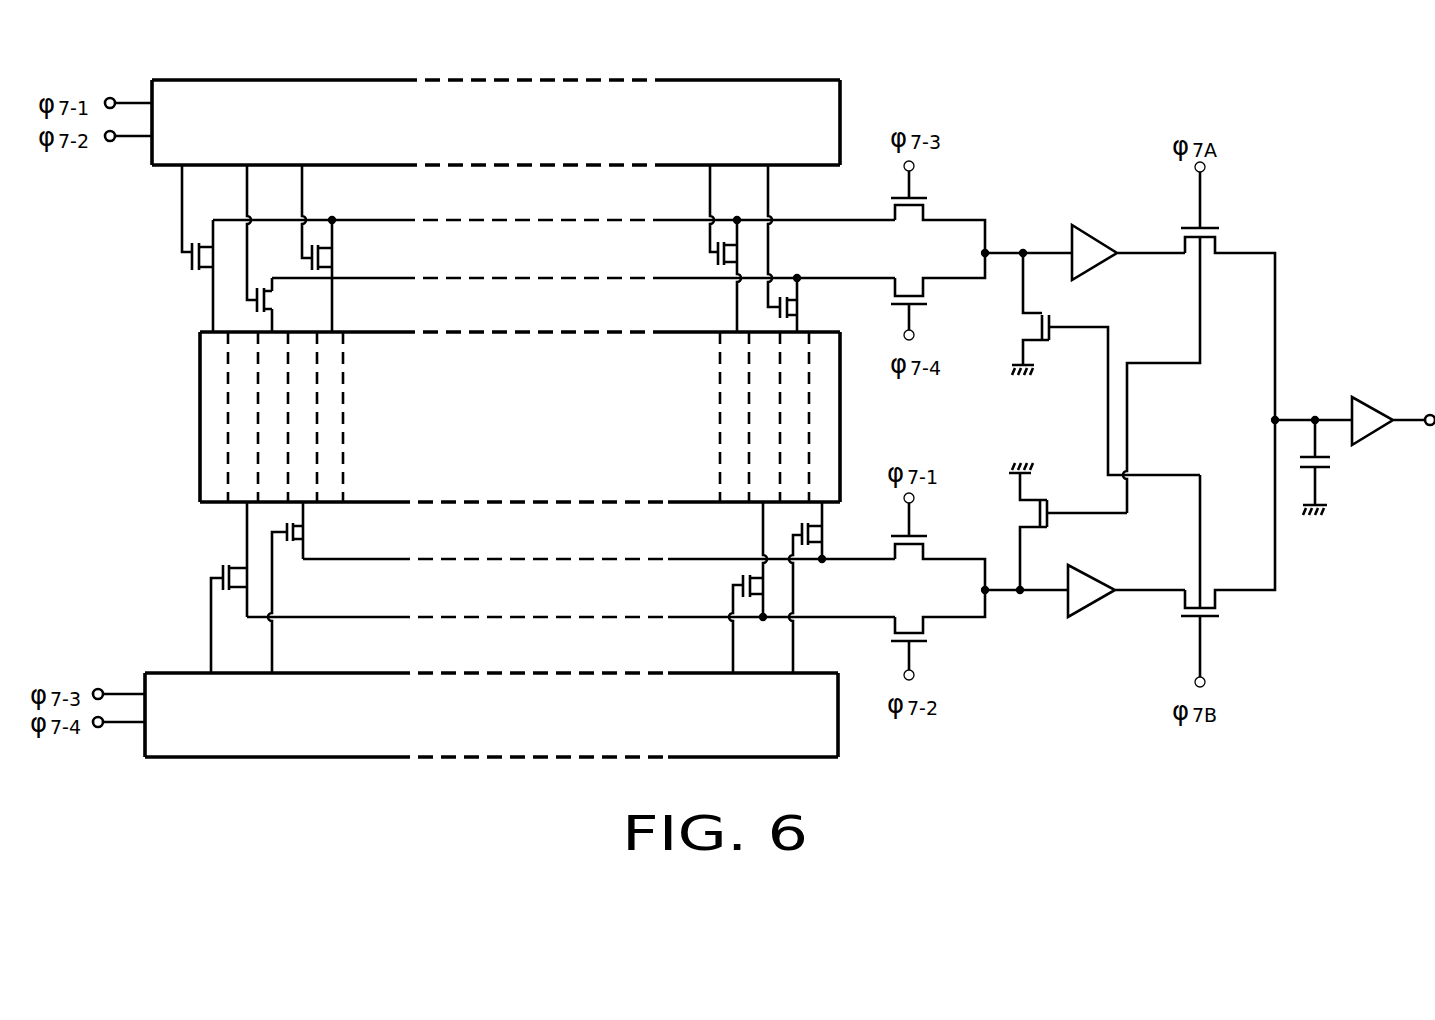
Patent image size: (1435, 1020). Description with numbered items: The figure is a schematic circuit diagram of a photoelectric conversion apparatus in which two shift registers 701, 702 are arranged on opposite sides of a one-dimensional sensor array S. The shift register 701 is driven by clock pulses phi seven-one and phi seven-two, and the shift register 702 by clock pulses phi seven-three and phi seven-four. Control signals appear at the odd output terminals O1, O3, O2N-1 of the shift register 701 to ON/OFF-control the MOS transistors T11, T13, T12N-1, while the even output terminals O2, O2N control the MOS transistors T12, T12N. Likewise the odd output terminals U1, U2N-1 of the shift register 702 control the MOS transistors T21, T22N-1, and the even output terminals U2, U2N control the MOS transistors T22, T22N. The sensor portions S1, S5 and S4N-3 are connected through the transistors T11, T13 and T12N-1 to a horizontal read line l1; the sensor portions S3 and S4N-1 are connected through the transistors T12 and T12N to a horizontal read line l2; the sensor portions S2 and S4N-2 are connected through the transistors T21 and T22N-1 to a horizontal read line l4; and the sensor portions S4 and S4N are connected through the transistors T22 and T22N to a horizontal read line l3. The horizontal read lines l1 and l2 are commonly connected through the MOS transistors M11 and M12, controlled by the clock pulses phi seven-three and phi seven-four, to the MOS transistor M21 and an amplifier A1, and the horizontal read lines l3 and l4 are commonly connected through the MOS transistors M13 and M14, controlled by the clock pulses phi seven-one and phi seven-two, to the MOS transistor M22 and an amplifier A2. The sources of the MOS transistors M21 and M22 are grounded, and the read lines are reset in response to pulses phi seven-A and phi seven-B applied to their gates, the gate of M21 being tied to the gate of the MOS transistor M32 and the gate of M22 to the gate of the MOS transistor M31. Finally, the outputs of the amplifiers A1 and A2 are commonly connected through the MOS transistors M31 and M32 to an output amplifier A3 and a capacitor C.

The shift register 701 is at (317, 78).
The shift register 702 is at (268, 759).
The one-dimensional sensor array S is at (190, 419).
The sensor portion S1 is at (217, 417).
The sensor portion S2 is at (243, 417).
The sensor portion S3 is at (273, 417).
The sensor portion S4 is at (303, 417).
The sensor portion S5 is at (329, 417).
The sensor portion S4N is at (840, 346).
The sensor portion S4N-1 is at (797, 385).
The sensor portion S4N-2 is at (770, 413).
The sensor portion S4N-3 is at (733, 449).
The horizontal read line l1 is at (554, 211).
The horizontal read line l2 is at (583, 269).
The horizontal read line l3 is at (599, 549).
The horizontal read line l4 is at (571, 607).
The output terminal O1 is at (198, 208).
The output terminal O2 is at (263, 232).
The output terminal O3 is at (318, 211).
The output terminal O2N-1 is at (677, 208).
The output terminal O2N is at (793, 236).
The output terminal U1 is at (227, 625).
The output terminal U2 is at (286, 602).
The output terminal U2N-1 is at (702, 629).
The output terminal U2N is at (817, 604).
The MOS transistor T11 is at (184, 276).
The MOS transistor T12 is at (288, 305).
The MOS transistor T13 is at (296, 275).
The MOS transistor T12N-1 is at (682, 275).
The MOS transistor T12N is at (824, 304).
The MOS transistor T21 is at (213, 559).
The MOS transistor T22 is at (276, 530).
The MOS transistor T22N-1 is at (704, 561).
The MOS transistor T22N is at (845, 532).
The MOS transistor M11 is at (938, 207).
The MOS transistor M12 is at (938, 296).
The MOS transistor M13 is at (938, 541).
The MOS transistor M14 is at (938, 635).
The MOS transistor M21 is at (1106, 364).
The MOS transistor M22 is at (1068, 526).
The MOS transistor M31 is at (1199, 337).
The MOS transistor M32 is at (1228, 553).
The amplifier A1 is at (1085, 244).
The amplifier A2 is at (1085, 605).
The amplifier A3 is at (1355, 415).
The capacitor C is at (1325, 466).